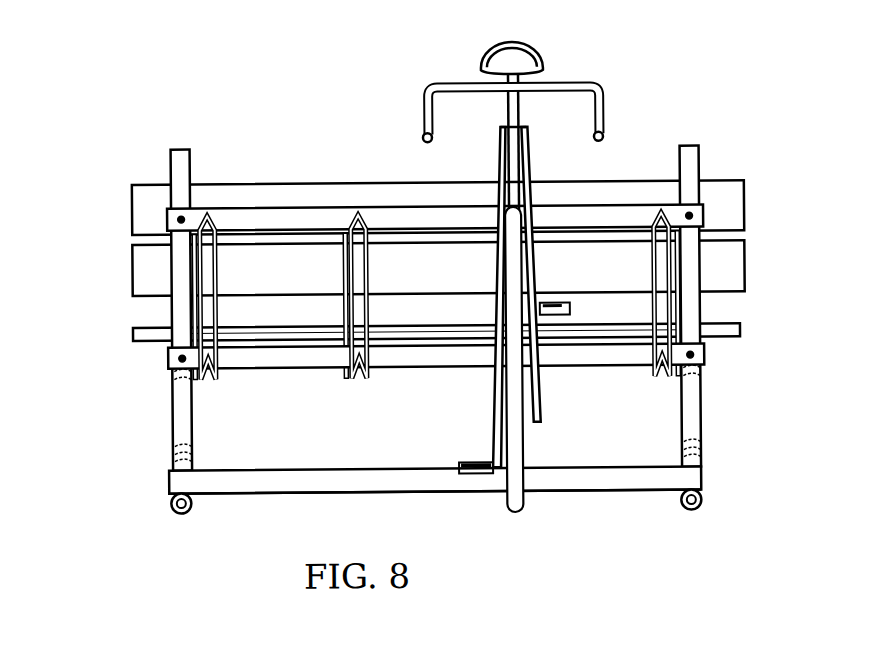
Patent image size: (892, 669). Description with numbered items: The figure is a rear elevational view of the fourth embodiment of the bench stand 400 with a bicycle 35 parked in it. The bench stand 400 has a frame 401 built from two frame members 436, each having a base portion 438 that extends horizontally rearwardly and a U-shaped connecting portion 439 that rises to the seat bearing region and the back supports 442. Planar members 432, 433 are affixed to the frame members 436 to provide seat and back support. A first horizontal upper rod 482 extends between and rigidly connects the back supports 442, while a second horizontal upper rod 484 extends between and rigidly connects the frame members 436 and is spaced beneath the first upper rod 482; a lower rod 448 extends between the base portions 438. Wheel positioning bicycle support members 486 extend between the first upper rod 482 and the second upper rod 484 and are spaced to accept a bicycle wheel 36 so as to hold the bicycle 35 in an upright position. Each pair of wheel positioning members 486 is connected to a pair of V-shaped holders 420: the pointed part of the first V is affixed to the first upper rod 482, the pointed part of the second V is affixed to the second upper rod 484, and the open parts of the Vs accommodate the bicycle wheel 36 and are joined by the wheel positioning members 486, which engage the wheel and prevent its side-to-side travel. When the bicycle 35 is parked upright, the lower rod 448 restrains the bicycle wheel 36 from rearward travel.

The bicycle 35 is at (497, 49).
The bicycle wheel 36 is at (505, 458).
The bench stand 400 is at (453, 307).
The frame 401 is at (620, 494).
The V-shaped holders 420 is at (209, 213).
The planar member 432 is at (741, 333).
The planar member 433 is at (745, 183).
The frame members 436 is at (702, 445).
The base portion 438 is at (701, 505).
The connecting portion 439 is at (702, 405).
The back supports 442 is at (703, 246).
The lower rod 448 is at (702, 480).
The first horizontal upper rod 482 is at (704, 214).
The second horizontal upper rod 484 is at (704, 355).
The wheel positioning members 486 is at (678, 324).